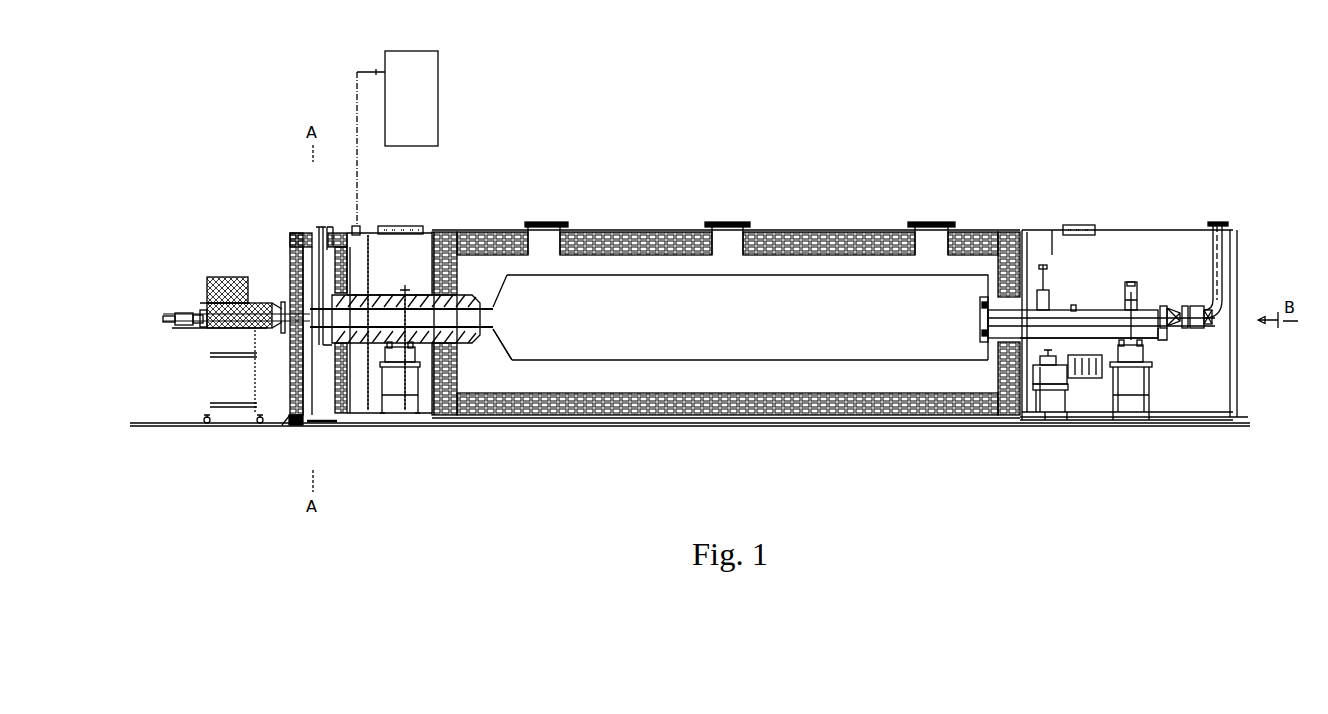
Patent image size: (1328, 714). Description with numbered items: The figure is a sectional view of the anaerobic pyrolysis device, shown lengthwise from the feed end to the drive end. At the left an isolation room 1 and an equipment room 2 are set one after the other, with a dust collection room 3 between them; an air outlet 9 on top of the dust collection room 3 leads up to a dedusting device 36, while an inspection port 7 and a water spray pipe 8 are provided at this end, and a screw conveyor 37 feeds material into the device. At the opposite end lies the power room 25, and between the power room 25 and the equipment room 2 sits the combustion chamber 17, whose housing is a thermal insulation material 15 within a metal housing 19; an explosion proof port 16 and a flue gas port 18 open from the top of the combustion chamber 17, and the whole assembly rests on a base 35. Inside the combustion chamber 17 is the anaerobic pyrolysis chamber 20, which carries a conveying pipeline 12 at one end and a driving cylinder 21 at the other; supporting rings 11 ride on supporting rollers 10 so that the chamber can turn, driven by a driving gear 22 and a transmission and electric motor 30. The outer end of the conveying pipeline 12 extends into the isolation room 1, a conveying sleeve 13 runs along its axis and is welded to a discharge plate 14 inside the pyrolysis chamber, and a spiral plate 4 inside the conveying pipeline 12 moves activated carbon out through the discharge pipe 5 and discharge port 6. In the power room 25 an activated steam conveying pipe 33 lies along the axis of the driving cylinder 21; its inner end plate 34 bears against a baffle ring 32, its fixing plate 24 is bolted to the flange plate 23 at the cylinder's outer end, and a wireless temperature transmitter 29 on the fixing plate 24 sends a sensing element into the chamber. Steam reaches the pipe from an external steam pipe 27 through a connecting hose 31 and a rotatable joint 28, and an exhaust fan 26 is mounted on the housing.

The isolation room 1 is at (310, 282).
The equipment room 2 is at (412, 248).
The dust collection room 3 is at (358, 402).
The spiral plate 4 is at (430, 300).
The discharge pipe 5 is at (320, 392).
The discharge port 6 is at (322, 423).
The inspection port 7 is at (329, 226).
The water spray pipe 8 is at (322, 225).
The air outlet 9 is at (358, 228).
The supporting roller 10 is at (417, 350).
The supporting ring 11 is at (403, 292).
The conveying pipeline 12 is at (452, 298).
The conveying sleeve 13 is at (493, 320).
The discharge plate 14 is at (512, 350).
The thermal insulation material 15 is at (563, 410).
The explosion proof port 16 is at (558, 220).
The combustion chamber 17 is at (688, 375).
The flue gas port 18 is at (735, 220).
The metal housing 19 is at (850, 232).
The anaerobic pyrolysis chamber 20 is at (845, 322).
The driving cylinder 21 is at (1057, 302).
The driving gear 22 is at (1045, 277).
The flange plate 23 is at (1157, 303).
The fixing plate 24 is at (1160, 298).
The power room 25 is at (1117, 247).
The exhaust fan 26 is at (398, 226).
The external steam pipe 27 is at (1220, 222).
The rotatable joint 28 is at (1198, 329).
The wireless temperature transmitter 29 is at (1160, 330).
The transmission and electric motor 30 is at (1067, 378).
The connecting hose 31 is at (1177, 305).
The baffle ring 32 is at (983, 298).
The activated steam conveying pipe 33 is at (980, 307).
The inner end plate 34 is at (982, 334).
The base 35 is at (1182, 420).
The dedusting device 36 is at (413, 62).
The screw conveyor 37 is at (197, 312).